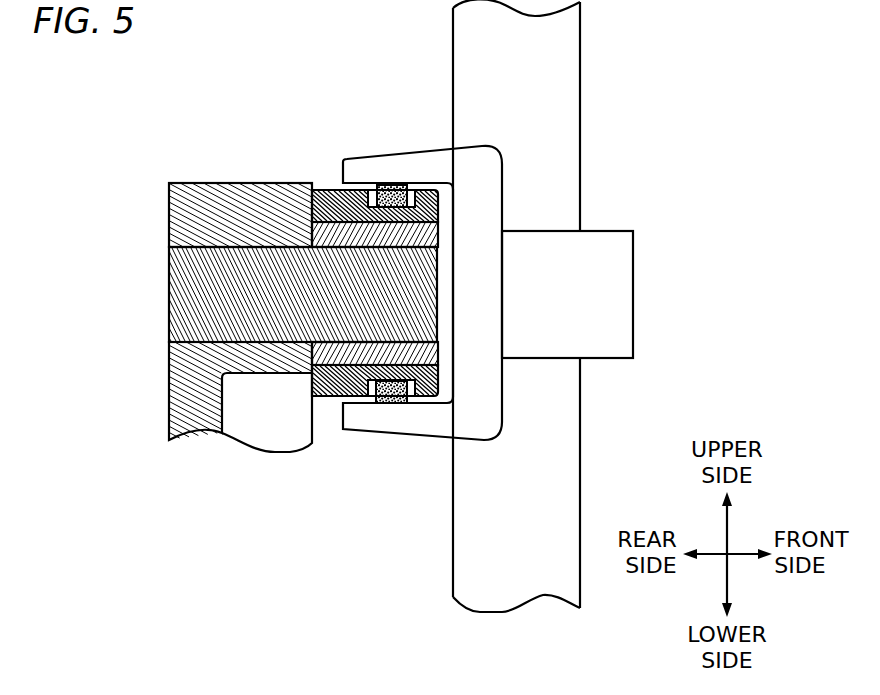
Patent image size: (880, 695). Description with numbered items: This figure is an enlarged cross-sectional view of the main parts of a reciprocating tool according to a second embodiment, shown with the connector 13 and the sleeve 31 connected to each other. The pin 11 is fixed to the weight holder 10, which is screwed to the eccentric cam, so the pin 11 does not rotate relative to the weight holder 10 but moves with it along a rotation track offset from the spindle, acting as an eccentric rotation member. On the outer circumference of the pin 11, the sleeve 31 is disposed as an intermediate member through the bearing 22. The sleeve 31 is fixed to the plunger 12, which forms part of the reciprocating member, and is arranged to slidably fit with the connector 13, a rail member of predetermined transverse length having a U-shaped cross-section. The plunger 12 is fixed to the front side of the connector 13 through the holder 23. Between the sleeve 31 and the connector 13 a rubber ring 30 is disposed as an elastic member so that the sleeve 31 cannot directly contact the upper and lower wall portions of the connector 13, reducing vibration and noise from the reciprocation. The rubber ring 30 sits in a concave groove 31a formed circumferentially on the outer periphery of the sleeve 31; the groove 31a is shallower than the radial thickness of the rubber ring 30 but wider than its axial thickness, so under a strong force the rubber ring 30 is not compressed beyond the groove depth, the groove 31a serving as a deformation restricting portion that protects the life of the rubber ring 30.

The weight holder 10 is at (170, 218).
The pin 11 is at (197, 308).
The plunger 12 is at (543, 160).
The connector 13 is at (482, 405).
The bearing 22 is at (332, 233).
The holder 23 is at (593, 282).
The rubber ring 30 is at (393, 403).
The sleeve 31 is at (338, 205).
The concave groove 31a is at (418, 389).